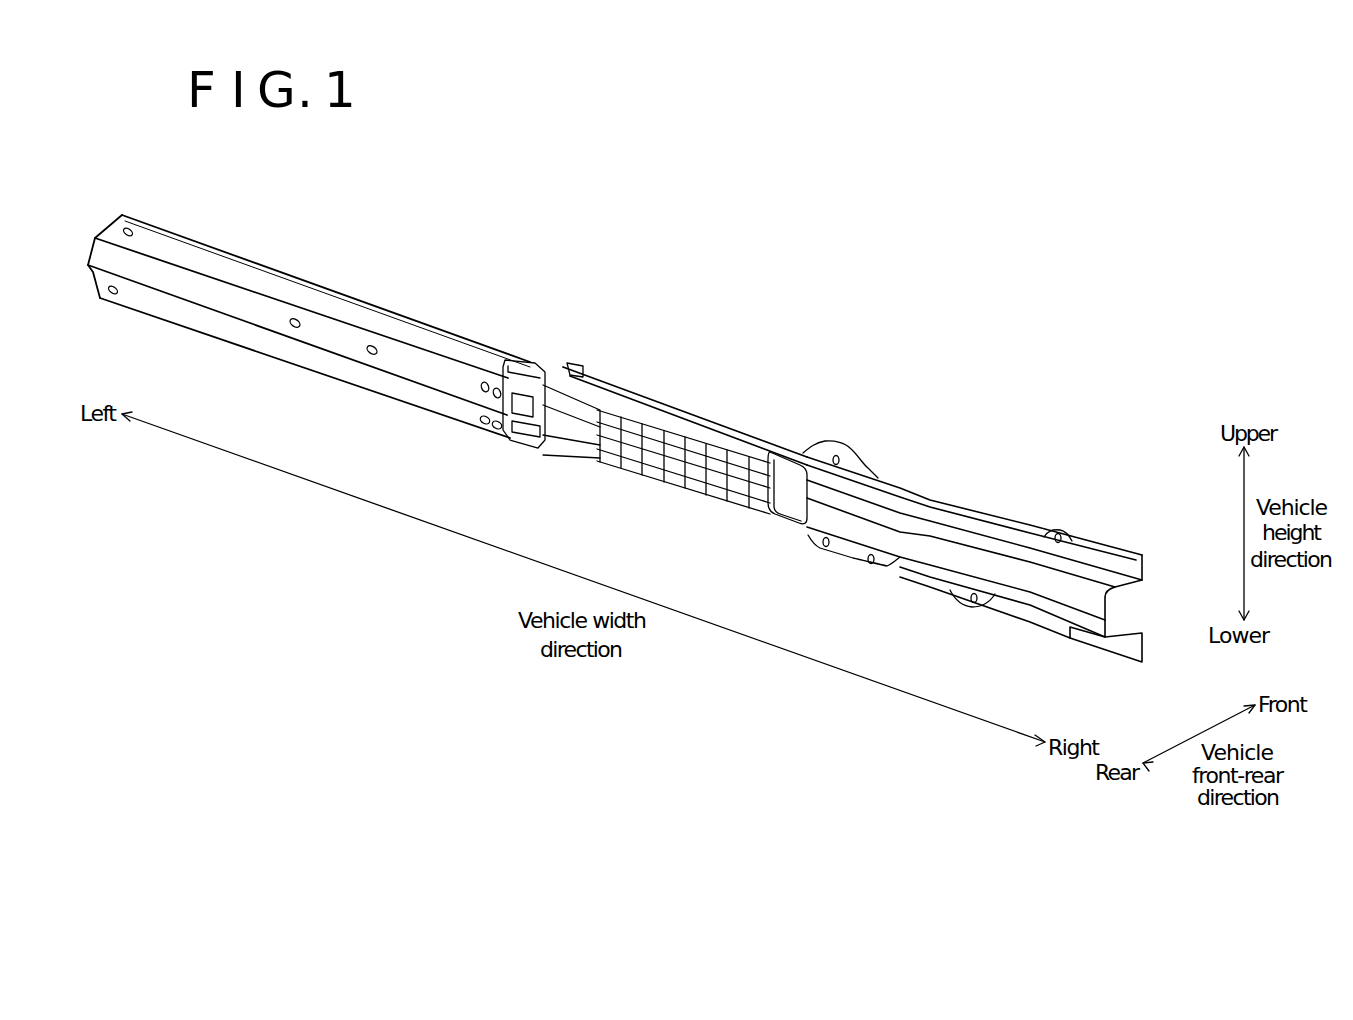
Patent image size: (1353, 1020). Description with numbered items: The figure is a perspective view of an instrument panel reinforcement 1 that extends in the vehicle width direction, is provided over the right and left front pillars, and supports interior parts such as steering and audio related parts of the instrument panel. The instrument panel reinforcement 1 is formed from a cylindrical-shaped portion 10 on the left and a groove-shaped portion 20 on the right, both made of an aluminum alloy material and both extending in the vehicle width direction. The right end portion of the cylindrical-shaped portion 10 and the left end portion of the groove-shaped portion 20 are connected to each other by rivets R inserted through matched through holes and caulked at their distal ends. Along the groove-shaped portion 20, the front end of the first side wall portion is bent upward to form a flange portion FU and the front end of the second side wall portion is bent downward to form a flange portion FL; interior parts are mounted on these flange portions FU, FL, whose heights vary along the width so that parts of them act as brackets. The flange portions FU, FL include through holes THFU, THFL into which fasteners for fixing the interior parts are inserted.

The instrument panel reinforcement 1 is at (409, 203).
The cylindrical-shaped portion 10 is at (292, 364).
The groove-shaped portion 20 is at (697, 497).
The rivets R is at (484, 382).
The flange portion FU is at (860, 453).
The flange portion FL is at (860, 568).
The through hole THFU is at (1057, 532).
The through hole THFL is at (998, 645).